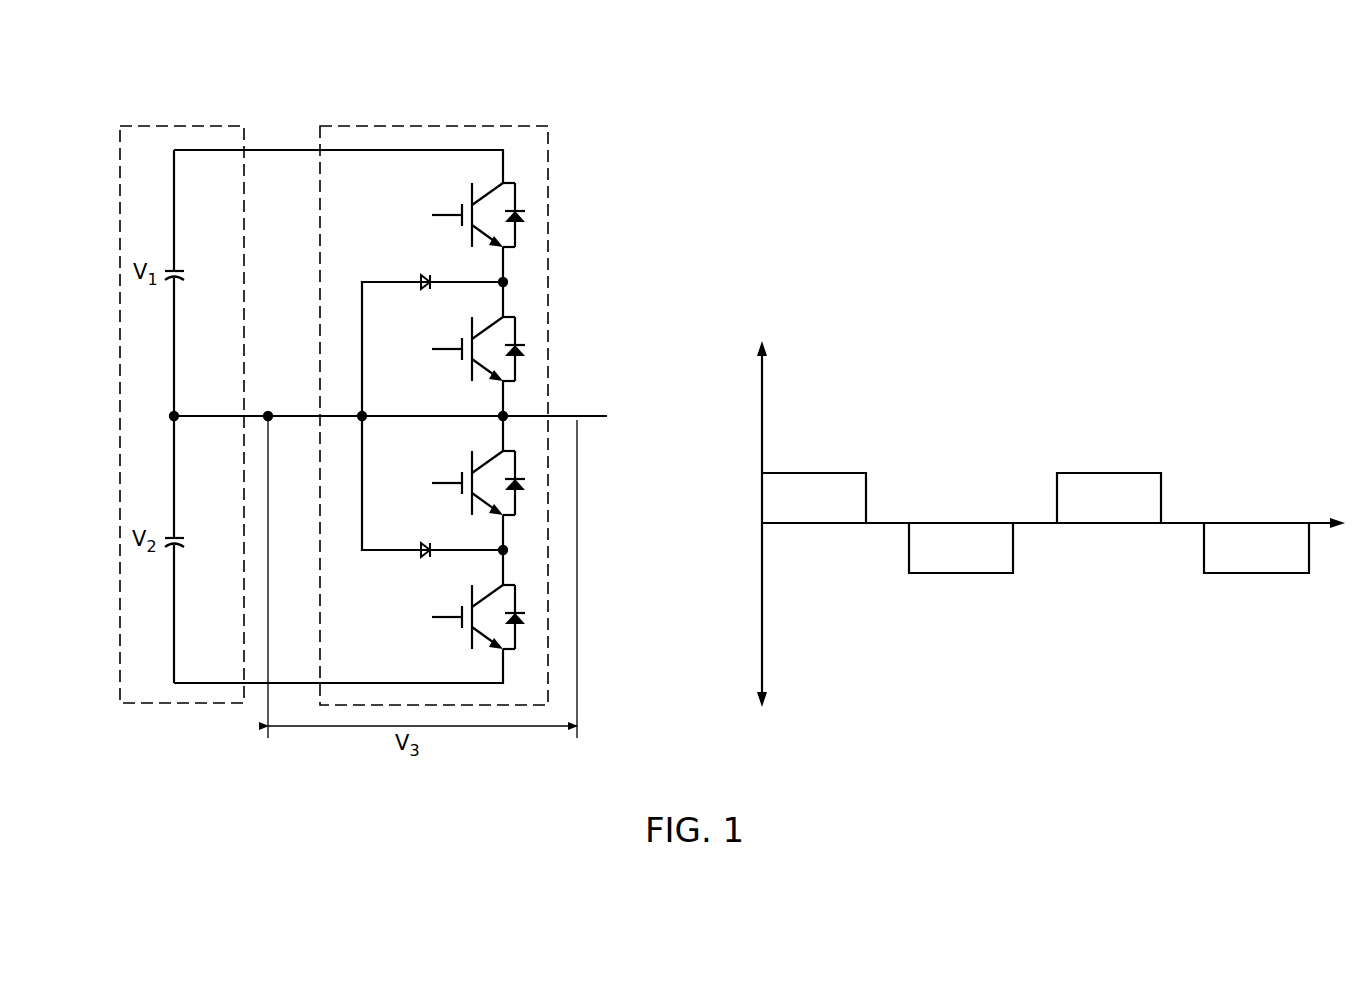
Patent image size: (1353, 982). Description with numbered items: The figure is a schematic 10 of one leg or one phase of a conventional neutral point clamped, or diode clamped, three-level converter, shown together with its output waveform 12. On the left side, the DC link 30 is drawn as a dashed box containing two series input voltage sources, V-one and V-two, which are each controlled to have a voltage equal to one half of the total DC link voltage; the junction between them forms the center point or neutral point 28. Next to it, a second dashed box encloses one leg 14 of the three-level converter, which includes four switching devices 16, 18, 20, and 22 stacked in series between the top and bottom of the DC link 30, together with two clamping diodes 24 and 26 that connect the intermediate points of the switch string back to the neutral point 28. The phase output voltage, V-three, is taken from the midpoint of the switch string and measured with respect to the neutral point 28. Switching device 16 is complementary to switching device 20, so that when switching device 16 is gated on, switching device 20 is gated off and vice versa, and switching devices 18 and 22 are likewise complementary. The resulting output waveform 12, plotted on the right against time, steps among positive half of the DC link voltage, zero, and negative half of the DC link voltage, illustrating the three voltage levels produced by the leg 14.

The schematic 10 is at (607, 83).
The output waveform 12 is at (1200, 703).
The leg 14 is at (402, 126).
The switching device 16 is at (470, 190).
The switching device 18 is at (470, 325).
The switching device 20 is at (470, 458).
The switching device 22 is at (470, 593).
The clamping diode 24 is at (421, 280).
The clamping diode 26 is at (421, 548).
The neutral point 28 is at (176, 414).
The DC link 30 is at (185, 125).